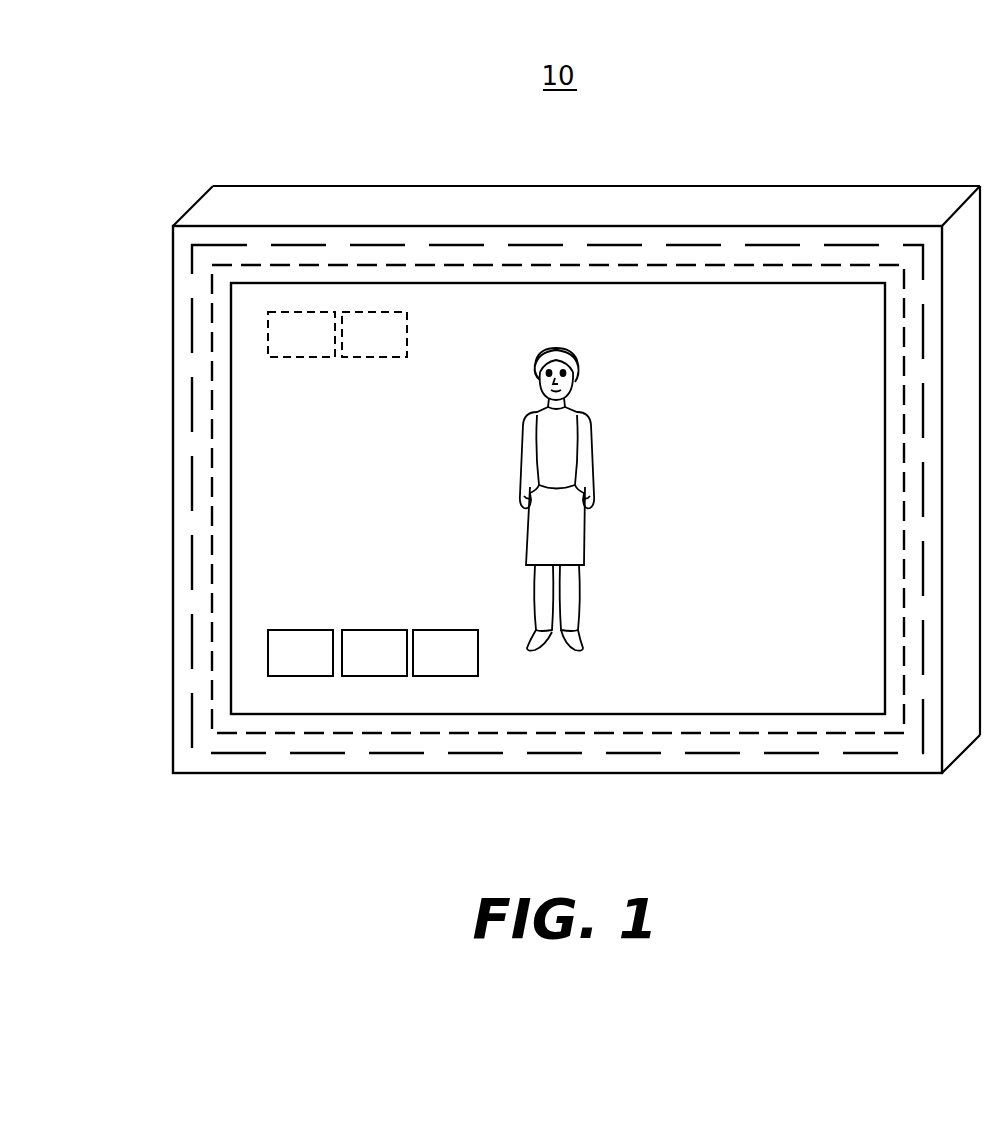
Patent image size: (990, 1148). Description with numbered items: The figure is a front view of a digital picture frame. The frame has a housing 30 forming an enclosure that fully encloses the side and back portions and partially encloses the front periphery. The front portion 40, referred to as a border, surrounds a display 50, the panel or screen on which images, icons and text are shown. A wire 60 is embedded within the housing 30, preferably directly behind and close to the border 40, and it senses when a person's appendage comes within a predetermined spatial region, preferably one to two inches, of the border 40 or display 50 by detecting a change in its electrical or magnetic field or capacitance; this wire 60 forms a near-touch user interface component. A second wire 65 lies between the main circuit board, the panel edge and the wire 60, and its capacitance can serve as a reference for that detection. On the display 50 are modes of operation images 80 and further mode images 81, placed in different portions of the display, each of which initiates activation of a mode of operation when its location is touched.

The housing 30 is at (887, 168).
The front portion (border) 40 is at (173, 566).
The display 50 is at (747, 457).
The wire 60 is at (212, 430).
The second wire 65 is at (192, 490).
The modes of operation images 80 is at (302, 640).
The mode images 81 is at (300, 352).